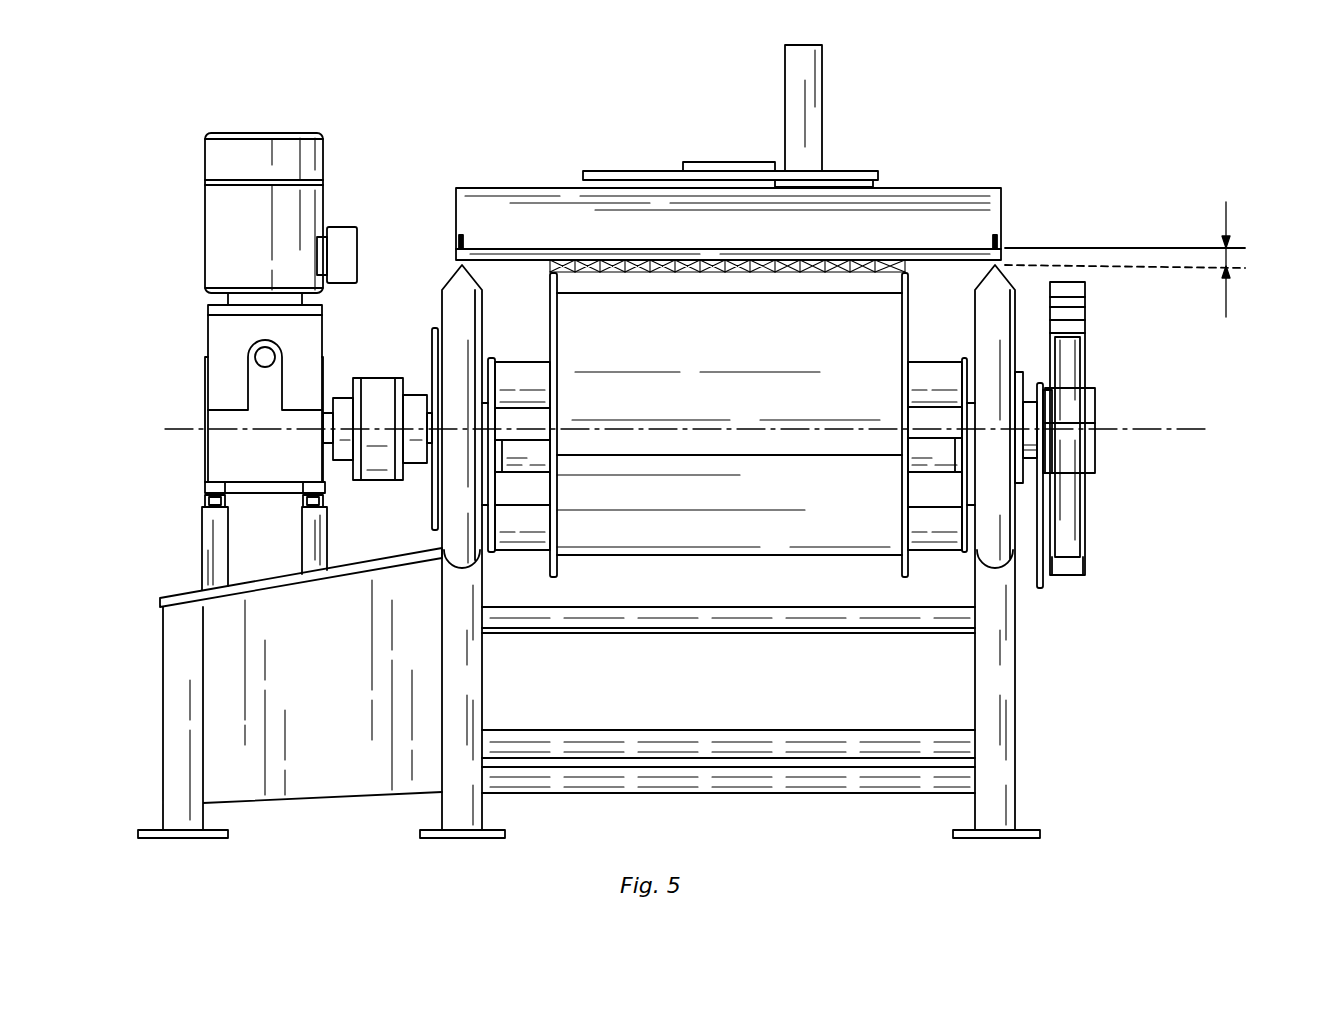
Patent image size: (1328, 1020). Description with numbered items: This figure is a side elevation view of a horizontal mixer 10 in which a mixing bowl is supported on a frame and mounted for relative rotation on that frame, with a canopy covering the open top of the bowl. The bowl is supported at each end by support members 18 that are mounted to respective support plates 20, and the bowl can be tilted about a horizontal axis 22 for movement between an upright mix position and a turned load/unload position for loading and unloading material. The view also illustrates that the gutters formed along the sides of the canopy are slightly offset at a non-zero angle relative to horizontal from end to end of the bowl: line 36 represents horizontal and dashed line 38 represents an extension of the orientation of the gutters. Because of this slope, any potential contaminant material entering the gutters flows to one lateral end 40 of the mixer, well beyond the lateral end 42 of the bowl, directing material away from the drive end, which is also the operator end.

The horizontal mixer 10 is at (589, 485).
The support members 18 is at (515, 520).
The support plates 20 is at (492, 380).
The horizontal axis 22 is at (1152, 428).
The line 36 is at (1105, 248).
The dashed line 38 is at (1118, 268).
The lateral end 40 is at (1020, 226).
The lateral end 42 is at (924, 316).